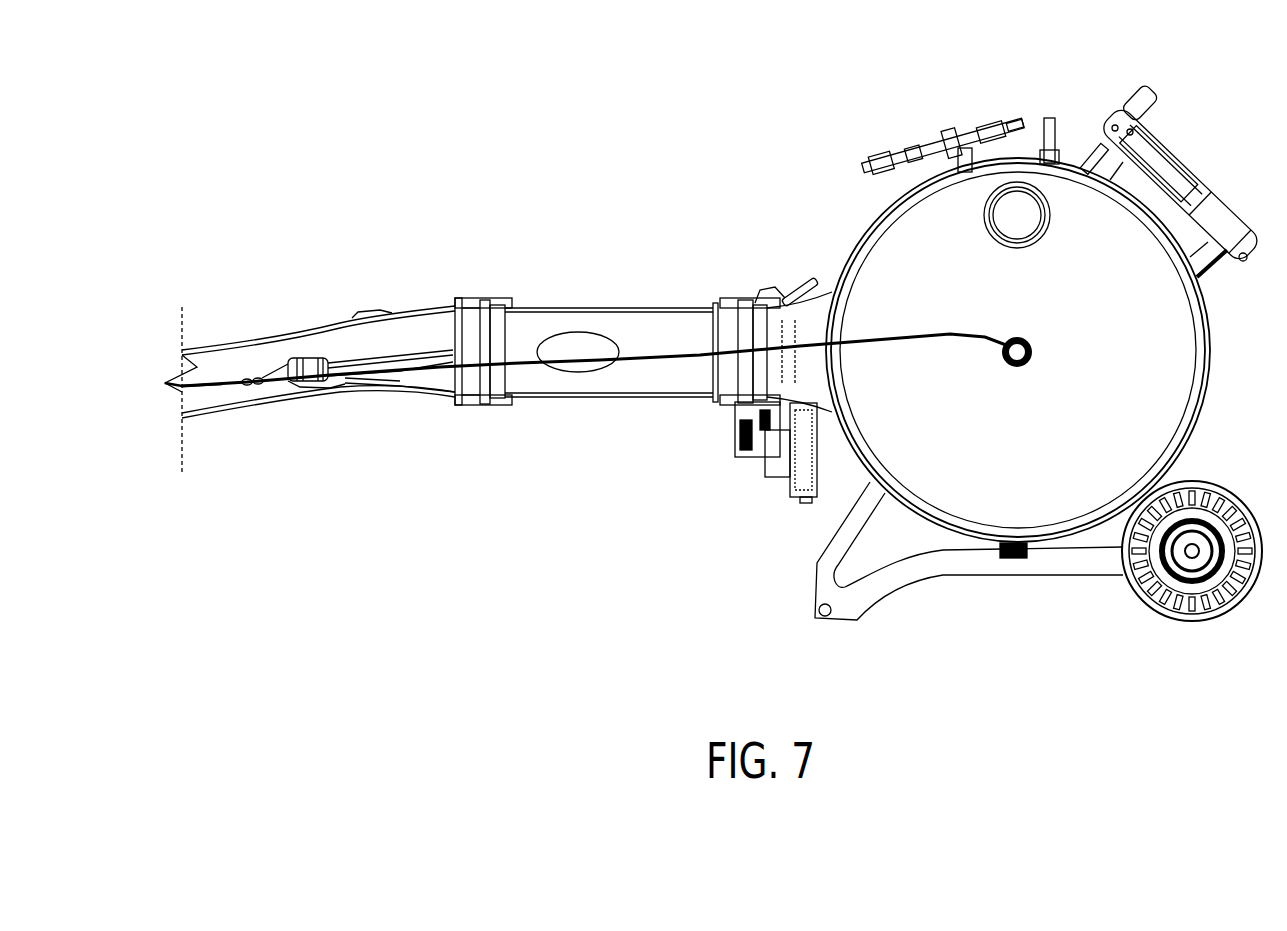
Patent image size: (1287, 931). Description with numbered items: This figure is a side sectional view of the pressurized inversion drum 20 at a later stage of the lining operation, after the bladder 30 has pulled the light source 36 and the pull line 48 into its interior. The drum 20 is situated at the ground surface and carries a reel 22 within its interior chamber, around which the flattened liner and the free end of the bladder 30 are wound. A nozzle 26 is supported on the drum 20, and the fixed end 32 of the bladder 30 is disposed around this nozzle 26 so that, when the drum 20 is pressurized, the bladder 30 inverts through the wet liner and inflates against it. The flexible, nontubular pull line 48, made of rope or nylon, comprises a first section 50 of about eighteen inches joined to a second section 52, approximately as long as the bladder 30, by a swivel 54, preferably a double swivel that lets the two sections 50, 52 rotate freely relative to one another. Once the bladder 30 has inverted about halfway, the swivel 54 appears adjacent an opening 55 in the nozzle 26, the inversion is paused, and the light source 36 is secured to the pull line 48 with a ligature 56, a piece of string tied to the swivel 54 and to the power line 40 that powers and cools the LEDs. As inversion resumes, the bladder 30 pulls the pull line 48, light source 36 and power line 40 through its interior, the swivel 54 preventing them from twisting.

The inversion drum 20 is at (1038, 98).
The reel 22 is at (1030, 358).
The nozzle 26 is at (410, 393).
The bladder 30 is at (207, 410).
The fixed end of the bladder 32 is at (367, 310).
The light source 36 is at (308, 365).
The power line 40 is at (397, 353).
The pull line 48 is at (660, 368).
The first section 50 is at (222, 383).
The second section 52 is at (342, 378).
The swivel 54 is at (247, 380).
The opening 55 is at (570, 332).
The ligature 56 is at (258, 380).